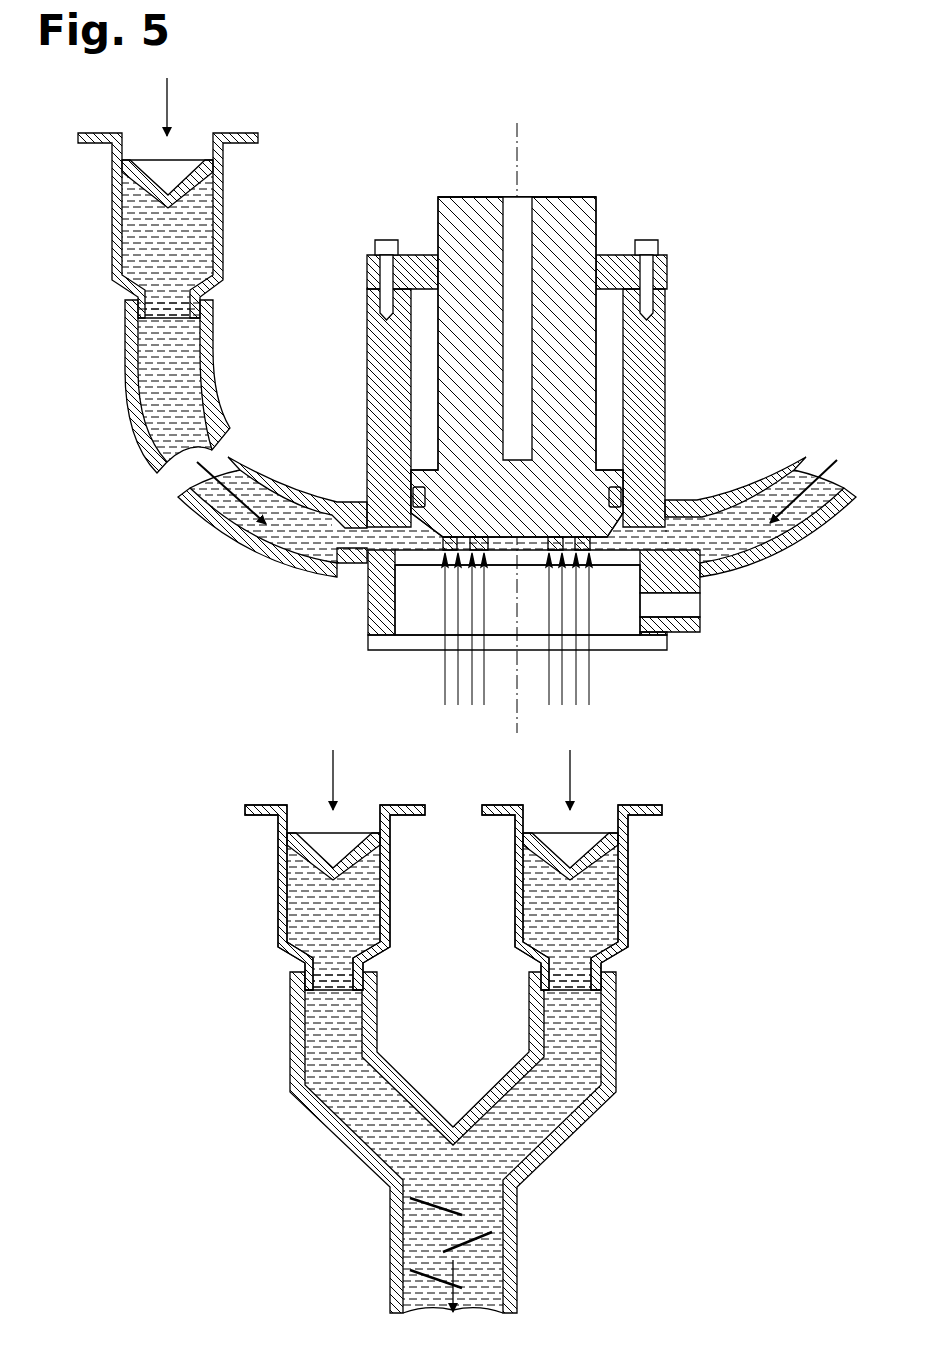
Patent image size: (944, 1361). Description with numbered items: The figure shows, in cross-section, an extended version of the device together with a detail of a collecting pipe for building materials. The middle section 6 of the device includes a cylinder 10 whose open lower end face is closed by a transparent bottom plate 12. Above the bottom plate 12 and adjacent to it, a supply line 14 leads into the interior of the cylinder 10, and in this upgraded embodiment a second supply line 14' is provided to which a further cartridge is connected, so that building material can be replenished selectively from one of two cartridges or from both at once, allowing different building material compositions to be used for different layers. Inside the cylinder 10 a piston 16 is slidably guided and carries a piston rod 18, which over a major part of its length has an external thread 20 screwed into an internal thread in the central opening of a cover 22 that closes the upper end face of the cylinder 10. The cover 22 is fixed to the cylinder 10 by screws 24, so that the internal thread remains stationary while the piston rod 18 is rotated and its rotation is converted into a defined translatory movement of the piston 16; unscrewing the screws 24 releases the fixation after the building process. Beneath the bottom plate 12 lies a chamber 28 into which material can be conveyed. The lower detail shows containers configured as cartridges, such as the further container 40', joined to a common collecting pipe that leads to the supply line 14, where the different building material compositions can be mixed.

The middle section 6 is at (790, 291).
The cylinder 10 is at (367, 426).
The bottom plate 12 is at (418, 565).
The supply line 14 is at (272, 558).
The second supply line 14' is at (760, 517).
The piston 16 is at (606, 490).
The piston rod 18 is at (562, 197).
The external thread 20 is at (596, 233).
The cover 22 is at (367, 272).
The screws 24 is at (375, 245).
The chamber 28 is at (615, 625).
The container 40' is at (594, 870).